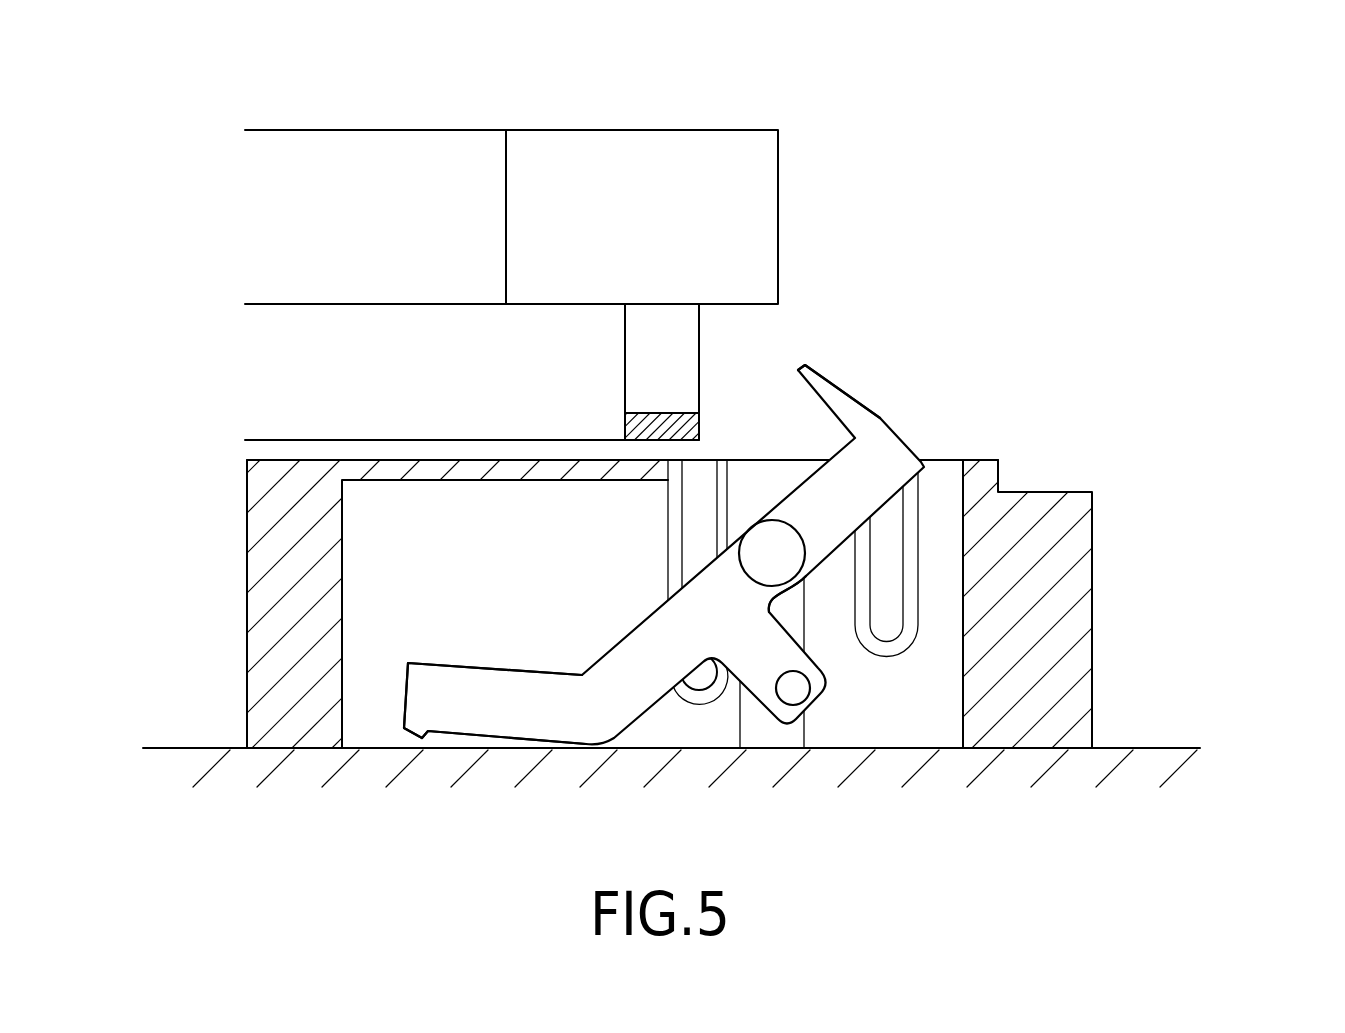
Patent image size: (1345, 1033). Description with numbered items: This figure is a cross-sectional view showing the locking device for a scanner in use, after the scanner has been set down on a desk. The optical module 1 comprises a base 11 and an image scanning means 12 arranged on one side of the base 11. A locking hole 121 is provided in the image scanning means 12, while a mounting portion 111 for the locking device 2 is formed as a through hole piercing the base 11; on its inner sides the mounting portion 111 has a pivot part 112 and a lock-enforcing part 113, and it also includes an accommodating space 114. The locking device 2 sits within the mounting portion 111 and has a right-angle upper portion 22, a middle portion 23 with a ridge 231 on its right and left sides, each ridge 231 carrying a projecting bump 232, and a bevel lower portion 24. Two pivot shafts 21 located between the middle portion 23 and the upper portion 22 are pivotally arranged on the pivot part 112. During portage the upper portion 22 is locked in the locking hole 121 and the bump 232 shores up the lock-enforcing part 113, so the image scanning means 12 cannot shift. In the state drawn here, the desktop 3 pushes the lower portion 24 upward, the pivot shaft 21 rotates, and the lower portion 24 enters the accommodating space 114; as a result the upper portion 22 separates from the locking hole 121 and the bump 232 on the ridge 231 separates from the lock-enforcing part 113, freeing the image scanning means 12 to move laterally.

The optical module 1 is at (1228, 183).
The base 11 is at (998, 462).
The mounting portion 111 is at (762, 460).
The pivot part 112 is at (748, 722).
The lock-enforcing part 113 is at (887, 612).
The accommodating space 114 is at (367, 565).
The image scanning means 12 is at (511, 234).
The locking hole 121 is at (642, 343).
The locking device 2 is at (664, 589).
The pivot shaft 21 is at (758, 553).
The upper portion 22 is at (842, 400).
The middle portion 23 is at (712, 606).
The ridge 231 is at (768, 643).
The bump 232 is at (793, 693).
The lower portion 24 is at (472, 688).
The desktop 3 is at (1138, 744).